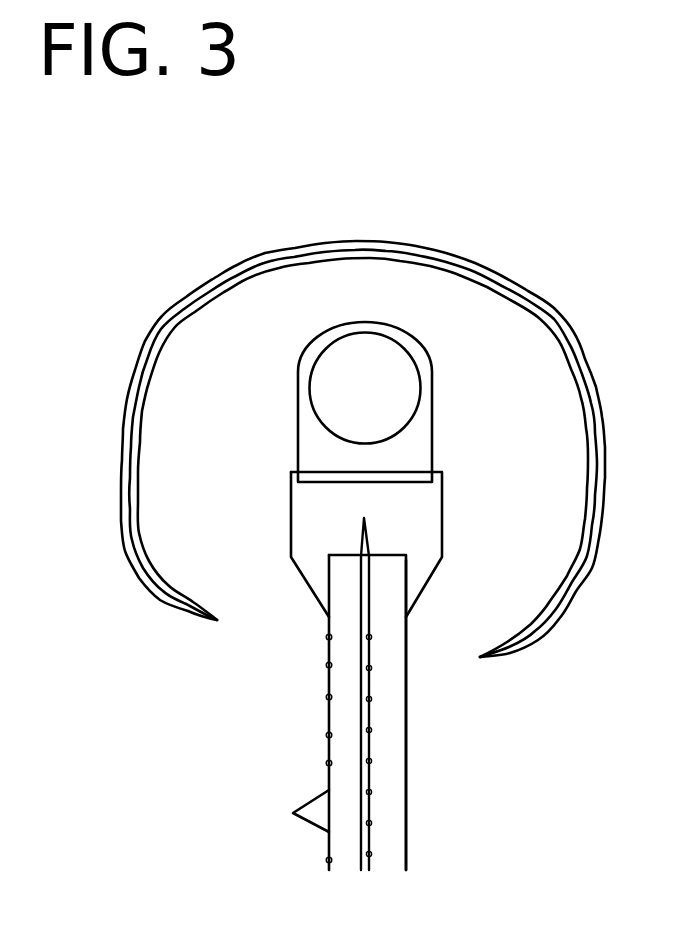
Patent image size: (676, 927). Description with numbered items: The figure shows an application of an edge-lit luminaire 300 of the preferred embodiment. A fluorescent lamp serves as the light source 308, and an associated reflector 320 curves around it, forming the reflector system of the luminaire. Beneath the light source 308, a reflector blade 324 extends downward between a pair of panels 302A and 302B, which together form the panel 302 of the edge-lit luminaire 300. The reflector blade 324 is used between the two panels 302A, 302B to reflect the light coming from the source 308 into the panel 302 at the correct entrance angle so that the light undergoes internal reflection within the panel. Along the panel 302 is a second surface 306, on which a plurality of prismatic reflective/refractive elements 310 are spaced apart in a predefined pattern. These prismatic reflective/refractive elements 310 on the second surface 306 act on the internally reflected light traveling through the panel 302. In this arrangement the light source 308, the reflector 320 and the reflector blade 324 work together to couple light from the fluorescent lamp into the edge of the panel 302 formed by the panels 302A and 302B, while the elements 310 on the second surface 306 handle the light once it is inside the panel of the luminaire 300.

The edge-lit luminaire 300 is at (318, 171).
The reflector 320 is at (446, 251).
The light source 308 is at (390, 402).
The reflector blade 324 is at (360, 539).
The panel 302 is at (364, 712).
The panel 302A is at (342, 718).
The panel 302B is at (506, 735).
The second surface 306 is at (329, 776).
The prismatic reflective/refractive elements 310 is at (293, 813).